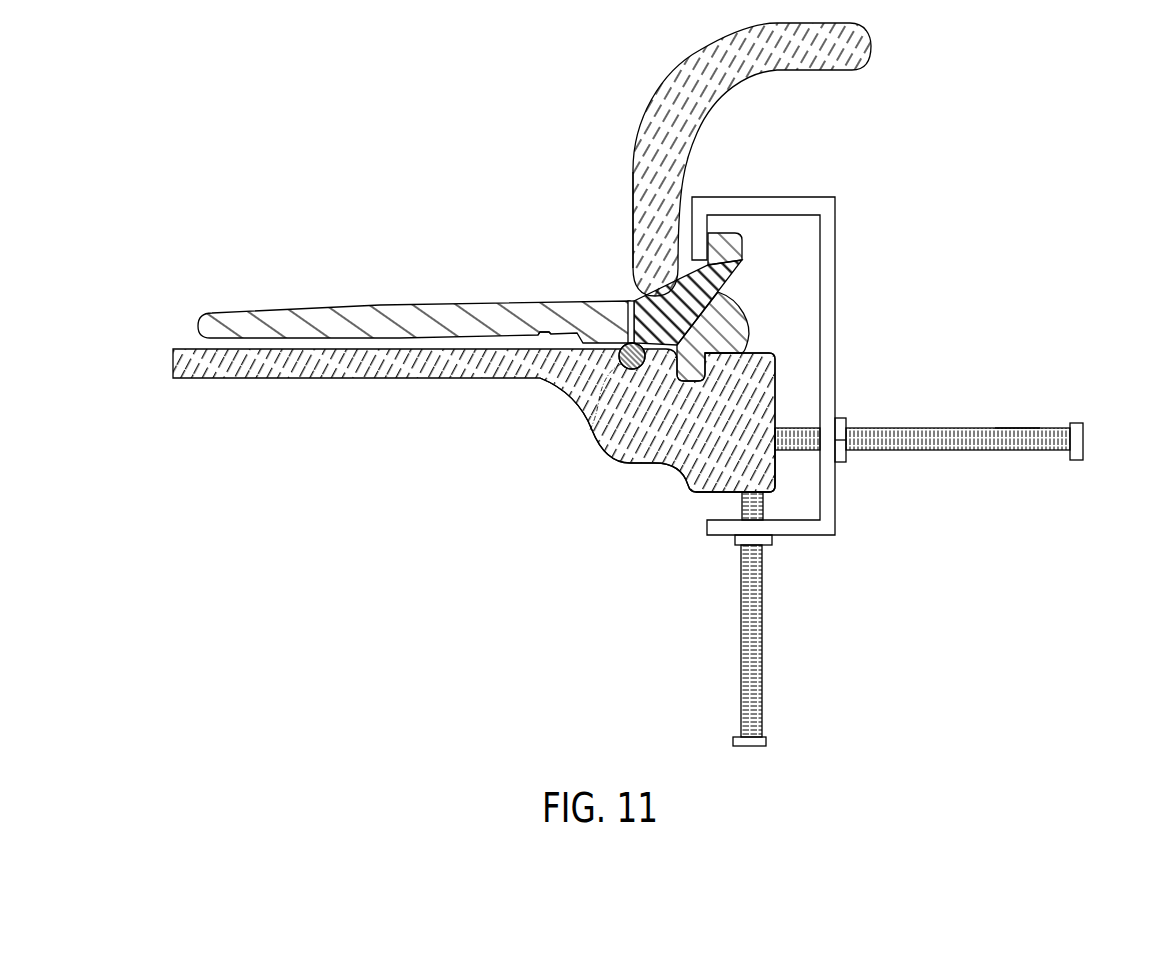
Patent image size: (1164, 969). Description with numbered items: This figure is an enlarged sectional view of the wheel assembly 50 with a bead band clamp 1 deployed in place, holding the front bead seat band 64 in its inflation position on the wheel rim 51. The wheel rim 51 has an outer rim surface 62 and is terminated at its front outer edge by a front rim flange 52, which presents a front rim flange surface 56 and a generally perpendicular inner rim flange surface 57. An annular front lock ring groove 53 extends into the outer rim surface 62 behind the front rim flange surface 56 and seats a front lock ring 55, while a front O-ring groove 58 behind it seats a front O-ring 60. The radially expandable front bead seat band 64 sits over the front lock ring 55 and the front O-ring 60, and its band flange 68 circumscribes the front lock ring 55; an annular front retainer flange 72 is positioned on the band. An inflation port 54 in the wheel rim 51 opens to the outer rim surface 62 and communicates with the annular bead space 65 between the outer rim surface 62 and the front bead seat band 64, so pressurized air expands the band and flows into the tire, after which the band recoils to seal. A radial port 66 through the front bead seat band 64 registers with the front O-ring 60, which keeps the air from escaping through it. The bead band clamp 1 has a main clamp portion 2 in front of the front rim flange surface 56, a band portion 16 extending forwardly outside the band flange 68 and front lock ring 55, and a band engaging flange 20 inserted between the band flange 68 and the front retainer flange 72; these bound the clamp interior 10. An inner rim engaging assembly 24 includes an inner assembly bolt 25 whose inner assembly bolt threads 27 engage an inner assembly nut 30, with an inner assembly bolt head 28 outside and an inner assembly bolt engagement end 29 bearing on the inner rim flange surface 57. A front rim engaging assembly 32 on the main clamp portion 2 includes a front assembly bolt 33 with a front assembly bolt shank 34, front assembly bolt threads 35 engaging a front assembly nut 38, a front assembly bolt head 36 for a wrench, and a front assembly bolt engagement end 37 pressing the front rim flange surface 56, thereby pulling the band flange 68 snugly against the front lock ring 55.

The bead band clamp 1 is at (864, 165).
The main clamp portion 2 is at (853, 274).
The clamp interior 10 is at (760, 244).
The band portion 16 is at (800, 207).
The band engaging flange 20 is at (673, 212).
The inner rim engaging assembly 24 is at (806, 620).
The inner assembly bolt 25 is at (700, 690).
The inner assembly bolt threads 27 is at (738, 613).
The inner assembly bolt head 28 is at (733, 738).
The inner assembly bolt engagement end 29 is at (689, 491).
The inner assembly nut 30 is at (773, 541).
The front rim engaging assembly 32 is at (946, 392).
The front assembly bolt 33 is at (1016, 464).
The front assembly bolt shank 34 is at (923, 452).
The front assembly bolt threads 35 is at (995, 420).
The front assembly bolt head 36 is at (1085, 440).
The front assembly bolt engagement end 37 is at (778, 407).
The front assembly nut 38 is at (848, 416).
The wheel assembly 50 is at (412, 100).
The wheel rim 51 is at (183, 335).
The front rim flange 52 is at (794, 352).
The front lock ring groove 53 is at (757, 341).
The inflation port 54 is at (493, 379).
The front lock ring 55 is at (748, 286).
The front rim flange surface 56 is at (777, 479).
The inner rim flange surface 57 is at (706, 494).
The front O-ring groove 58 is at (623, 346).
The front O-ring 60 is at (590, 428).
The outer rim surface 62 is at (323, 312).
The front bead seat band 64 is at (390, 296).
The bead space 65 is at (540, 330).
The radial port 66 is at (634, 272).
The band flange 68 is at (728, 230).
The front retainer flange 72 is at (668, 103).